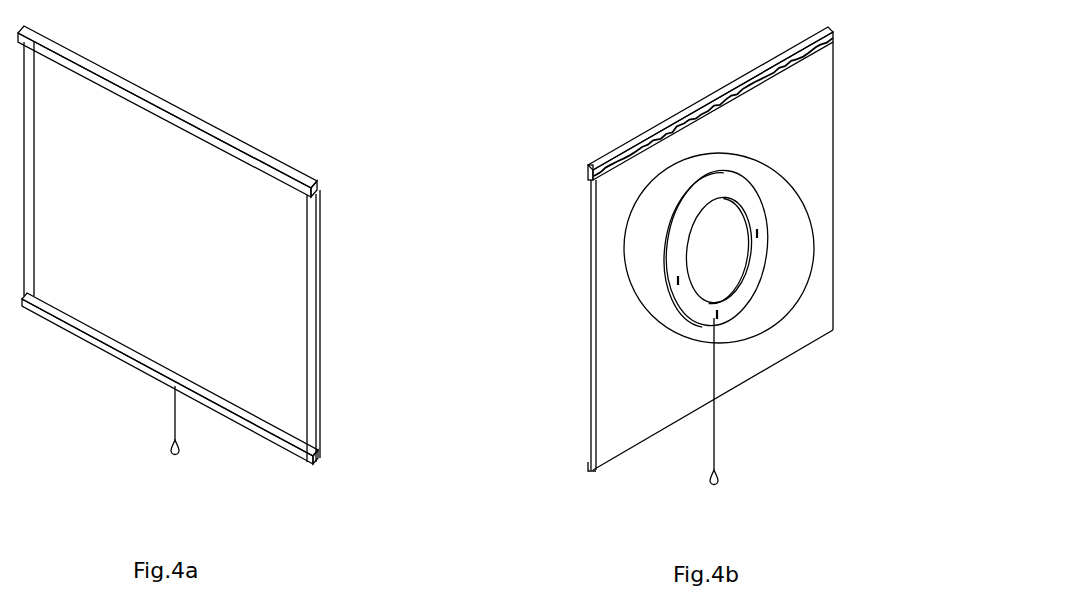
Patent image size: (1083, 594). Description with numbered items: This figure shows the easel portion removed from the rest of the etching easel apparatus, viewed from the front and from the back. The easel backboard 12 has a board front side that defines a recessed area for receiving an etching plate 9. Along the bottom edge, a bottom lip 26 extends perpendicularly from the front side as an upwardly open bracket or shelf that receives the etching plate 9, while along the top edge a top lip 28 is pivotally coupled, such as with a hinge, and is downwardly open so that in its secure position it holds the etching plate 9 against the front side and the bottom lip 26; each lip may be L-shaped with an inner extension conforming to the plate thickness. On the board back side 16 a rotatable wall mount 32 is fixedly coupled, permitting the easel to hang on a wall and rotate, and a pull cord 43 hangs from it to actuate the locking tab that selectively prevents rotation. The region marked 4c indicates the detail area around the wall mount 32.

In FIG. 4a, the easel backboard 12 is at (372, 197).
In FIG. 4b, the easel backboard 12 is at (871, 69).
In FIG. 4a, the top lip 28 is at (214, 136).
In FIG. 4b, the top lip 28 is at (707, 96).
In FIG. 4a, the etching plate 9 is at (165, 232).
In FIG. 4a, the bottom lip 26 is at (256, 434).
In FIG. 4a, the pull cord 43 is at (172, 426).
In FIG. 4b, the pull cord 43 is at (716, 431).
In FIG. 4b, the board back side 16 is at (617, 395).
In FIG. 4b, the circular region 4c is at (765, 248).
In FIG. 4b, the wall mount 32 is at (780, 263).